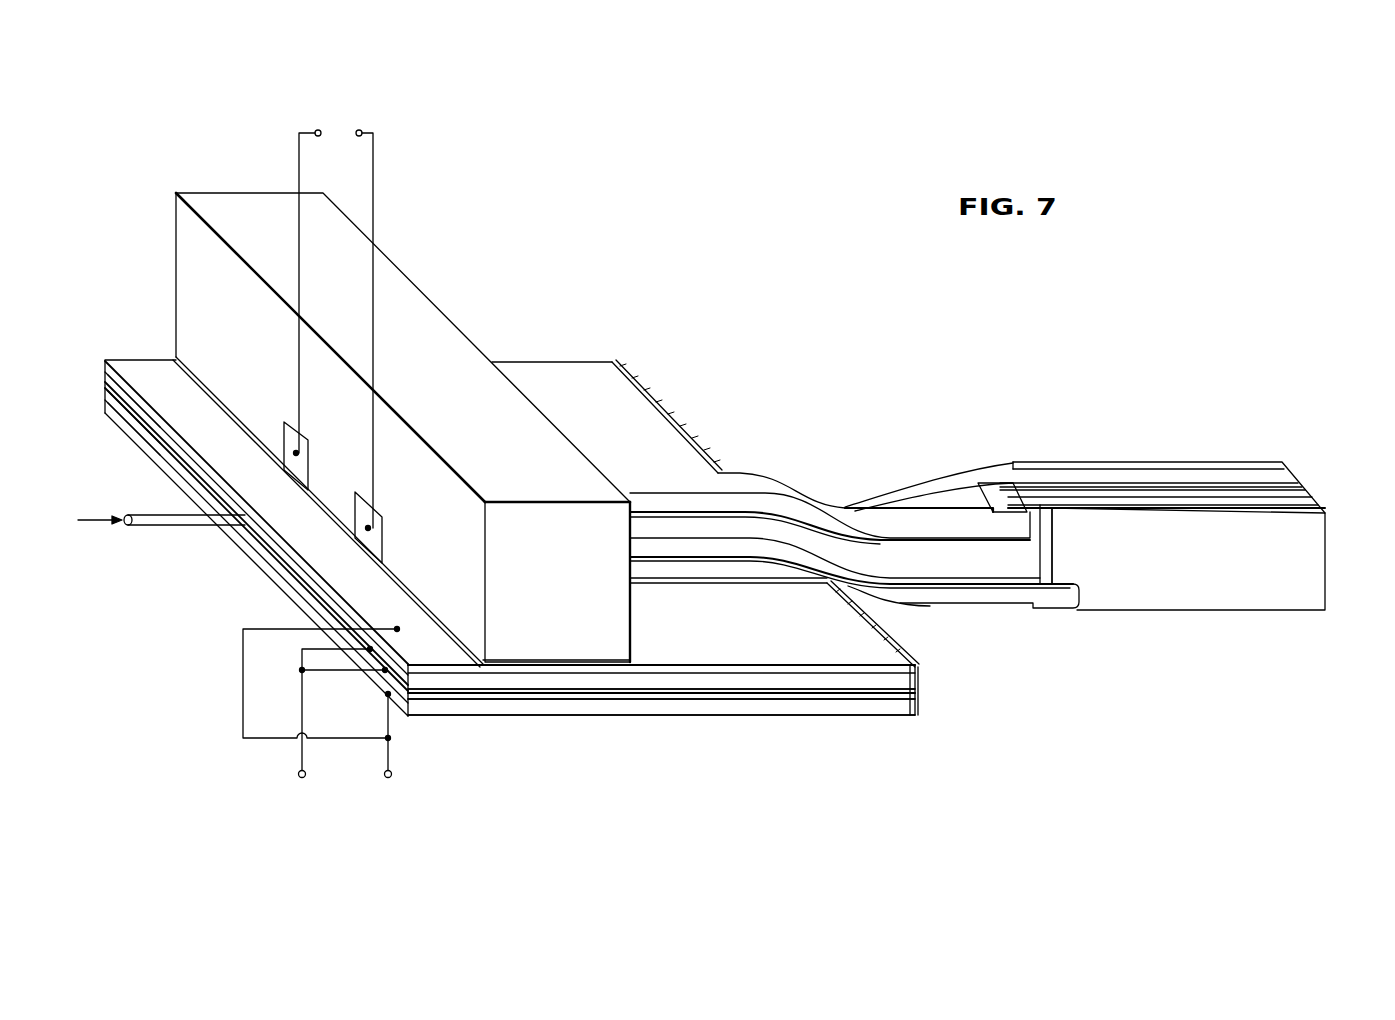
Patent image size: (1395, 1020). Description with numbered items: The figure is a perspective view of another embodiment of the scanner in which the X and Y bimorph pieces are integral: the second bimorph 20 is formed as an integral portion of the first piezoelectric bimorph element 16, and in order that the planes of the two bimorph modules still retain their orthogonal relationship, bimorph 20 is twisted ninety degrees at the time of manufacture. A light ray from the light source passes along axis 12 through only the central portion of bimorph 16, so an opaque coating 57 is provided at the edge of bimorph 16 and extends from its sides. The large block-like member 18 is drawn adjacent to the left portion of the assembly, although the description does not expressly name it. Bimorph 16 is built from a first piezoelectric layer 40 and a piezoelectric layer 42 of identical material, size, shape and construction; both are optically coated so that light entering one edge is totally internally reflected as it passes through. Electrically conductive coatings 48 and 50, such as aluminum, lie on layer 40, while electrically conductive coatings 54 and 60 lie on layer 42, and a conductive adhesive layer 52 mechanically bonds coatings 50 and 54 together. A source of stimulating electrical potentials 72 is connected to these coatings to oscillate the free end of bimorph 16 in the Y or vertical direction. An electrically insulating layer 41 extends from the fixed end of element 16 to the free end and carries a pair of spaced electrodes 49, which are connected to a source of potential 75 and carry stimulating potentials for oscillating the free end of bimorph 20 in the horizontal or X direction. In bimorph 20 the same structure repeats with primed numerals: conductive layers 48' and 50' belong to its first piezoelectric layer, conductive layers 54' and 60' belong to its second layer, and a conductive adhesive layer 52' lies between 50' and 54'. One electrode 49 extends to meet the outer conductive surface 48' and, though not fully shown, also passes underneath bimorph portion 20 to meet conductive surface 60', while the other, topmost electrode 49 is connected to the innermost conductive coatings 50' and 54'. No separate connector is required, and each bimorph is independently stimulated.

The axis 12 is at (88, 526).
The first piezoelectric bimorph element 16 is at (575, 341).
The block / crystal 18 is at (465, 410).
The second bimorph 20 is at (1157, 452).
The first piezoelectric layer 40 is at (872, 602).
The electrically insulating layer 41 is at (393, 574).
The piezoelectric layer 42 is at (777, 707).
The electrically conductive coating 48 is at (511, 538).
The conductive layer 48' is at (1166, 557).
The electrodes 49 is at (305, 466).
The electrically conductive coating 50 is at (121, 434).
The conductive layer 50' is at (1175, 456).
The conductive adhesive layer 52 is at (108, 400).
The conductive adhesive layer 52' is at (1193, 472).
The electrically conductive coating 54 is at (147, 408).
The conductive layer 54' is at (1182, 500).
The opaque coating 57 is at (660, 408).
The electrically conductive coating 60 is at (661, 736).
The conductive layer 60' is at (1064, 463).
The source of stimulating electrical potentials 72 is at (350, 798).
The source of potential 75 is at (329, 105).